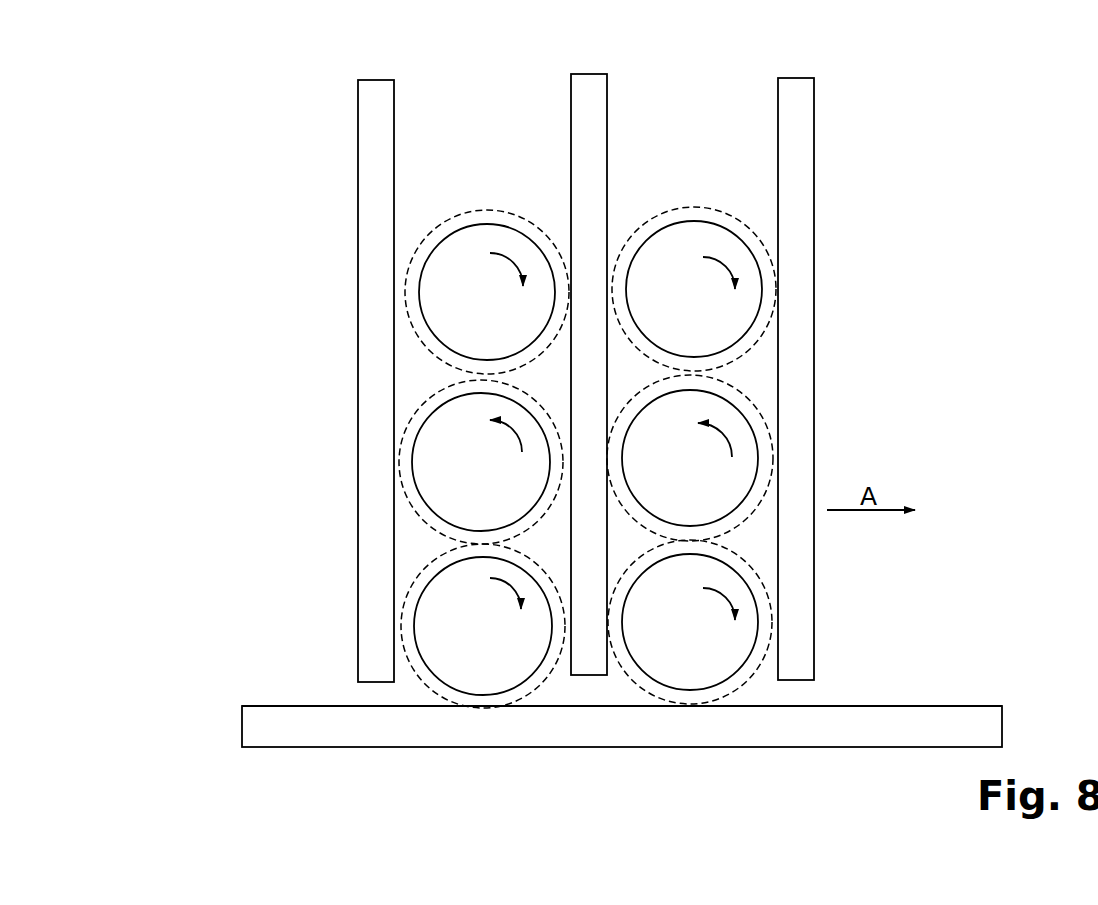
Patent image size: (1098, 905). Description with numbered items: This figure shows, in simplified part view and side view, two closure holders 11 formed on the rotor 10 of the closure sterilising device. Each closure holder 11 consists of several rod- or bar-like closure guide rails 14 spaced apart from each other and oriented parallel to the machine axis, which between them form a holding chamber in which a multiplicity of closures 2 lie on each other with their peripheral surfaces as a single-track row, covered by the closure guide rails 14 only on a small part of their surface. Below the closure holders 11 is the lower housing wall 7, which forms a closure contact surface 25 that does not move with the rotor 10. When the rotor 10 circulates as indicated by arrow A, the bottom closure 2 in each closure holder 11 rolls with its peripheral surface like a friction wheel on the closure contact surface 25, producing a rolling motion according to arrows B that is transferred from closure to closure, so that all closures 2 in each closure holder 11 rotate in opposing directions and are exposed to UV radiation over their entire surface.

The rotor 10 is at (906, 117).
The closure holder 11 is at (428, 157).
The closure 2 is at (439, 289).
The closure guide rail 14 is at (363, 345).
The closure contact surface 25 is at (865, 704).
The lower housing wall 7 is at (400, 732).